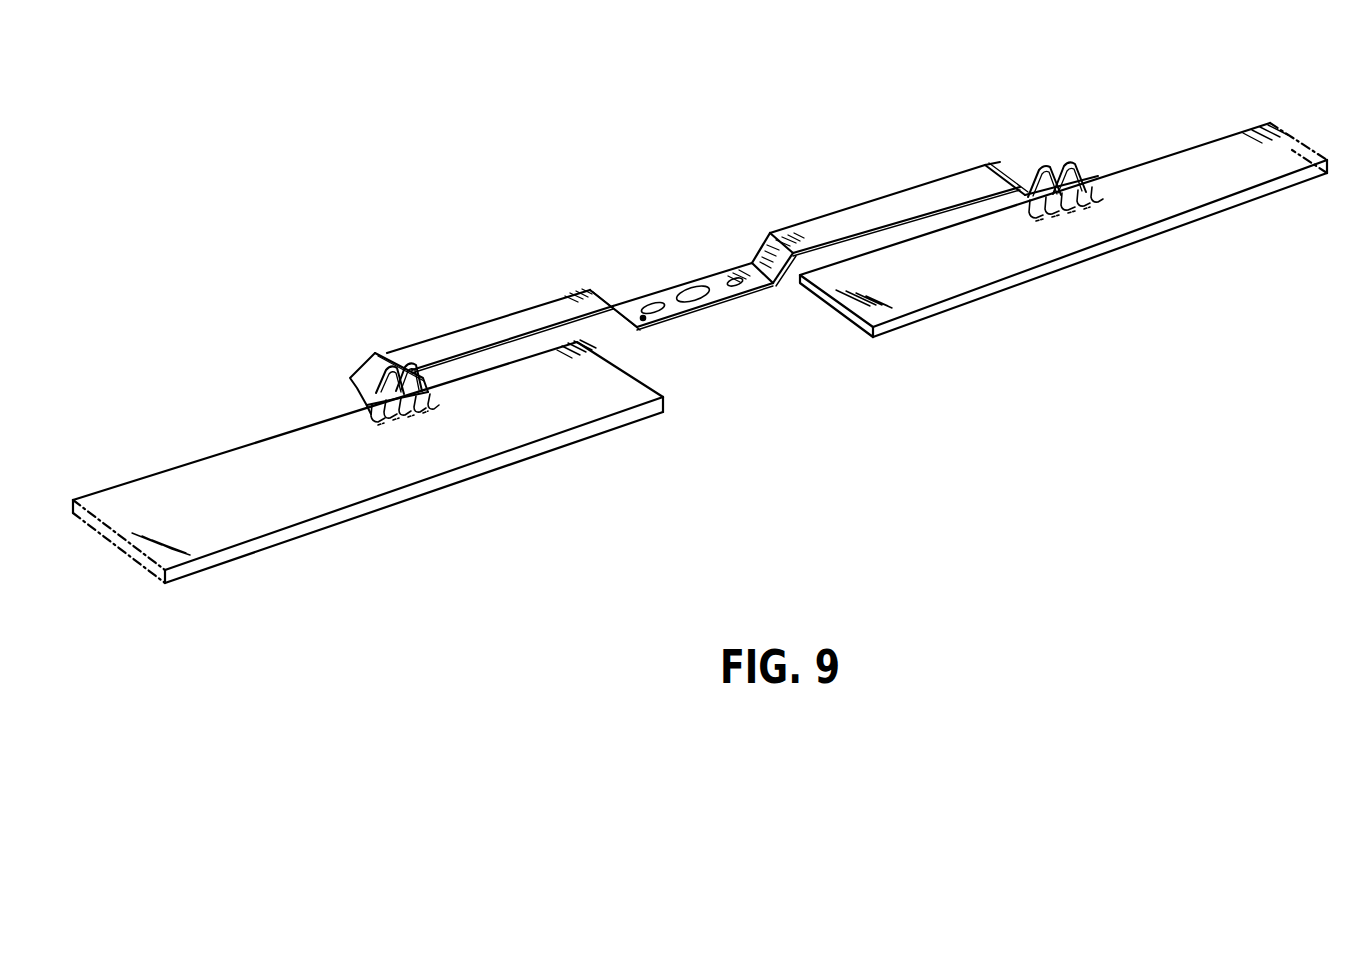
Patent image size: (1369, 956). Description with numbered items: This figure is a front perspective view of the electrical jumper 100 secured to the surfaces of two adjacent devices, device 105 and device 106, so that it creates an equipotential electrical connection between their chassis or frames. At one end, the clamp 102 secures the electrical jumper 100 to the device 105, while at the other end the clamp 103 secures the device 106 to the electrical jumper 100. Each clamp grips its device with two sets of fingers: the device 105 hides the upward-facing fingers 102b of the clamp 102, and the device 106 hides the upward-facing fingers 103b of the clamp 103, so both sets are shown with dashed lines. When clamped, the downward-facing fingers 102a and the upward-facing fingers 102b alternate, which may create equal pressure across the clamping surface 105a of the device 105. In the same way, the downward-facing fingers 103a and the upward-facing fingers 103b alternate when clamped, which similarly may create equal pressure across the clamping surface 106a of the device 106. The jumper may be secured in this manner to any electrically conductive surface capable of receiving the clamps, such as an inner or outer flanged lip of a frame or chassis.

The electrical jumper 100 is at (772, 207).
The clamp 102 is at (346, 362).
The downward-facing fingers 102a is at (363, 371).
The upward-facing fingers 102b is at (373, 424).
The clamp 103 is at (1062, 152).
The downward-facing fingers 103a is at (1073, 168).
The upward-facing fingers 103b is at (1100, 197).
The device 105 is at (368, 461).
The clamping surface 105a is at (530, 445).
The device 106 is at (1063, 198).
The clamping surface 106a is at (1133, 236).